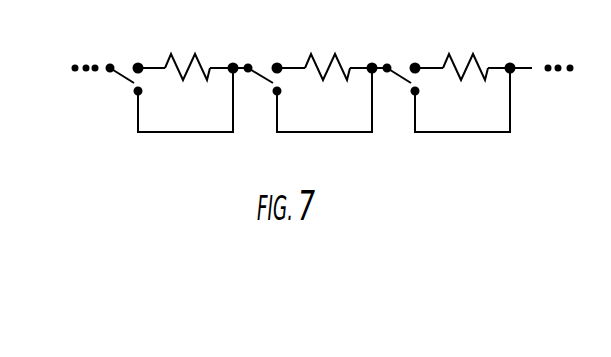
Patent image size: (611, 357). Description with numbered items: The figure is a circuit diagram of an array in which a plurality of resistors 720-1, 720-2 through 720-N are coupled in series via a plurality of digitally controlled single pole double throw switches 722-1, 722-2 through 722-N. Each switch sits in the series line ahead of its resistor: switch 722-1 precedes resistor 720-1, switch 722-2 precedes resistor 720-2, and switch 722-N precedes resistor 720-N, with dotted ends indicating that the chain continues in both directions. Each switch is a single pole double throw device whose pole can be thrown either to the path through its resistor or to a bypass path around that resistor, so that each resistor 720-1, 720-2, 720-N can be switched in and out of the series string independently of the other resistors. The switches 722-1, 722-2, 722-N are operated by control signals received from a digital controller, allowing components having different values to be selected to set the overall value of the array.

The digitally controlled single pole double throw switch 722-1 is at (130, 65).
The digitally controlled single pole double throw switch 722-2 is at (268, 65).
The digitally controlled single pole double throw switch 722-N is at (407, 65).
The resistor 720-1 is at (203, 132).
The resistor 720-2 is at (342, 132).
The resistor 720-N is at (480, 132).